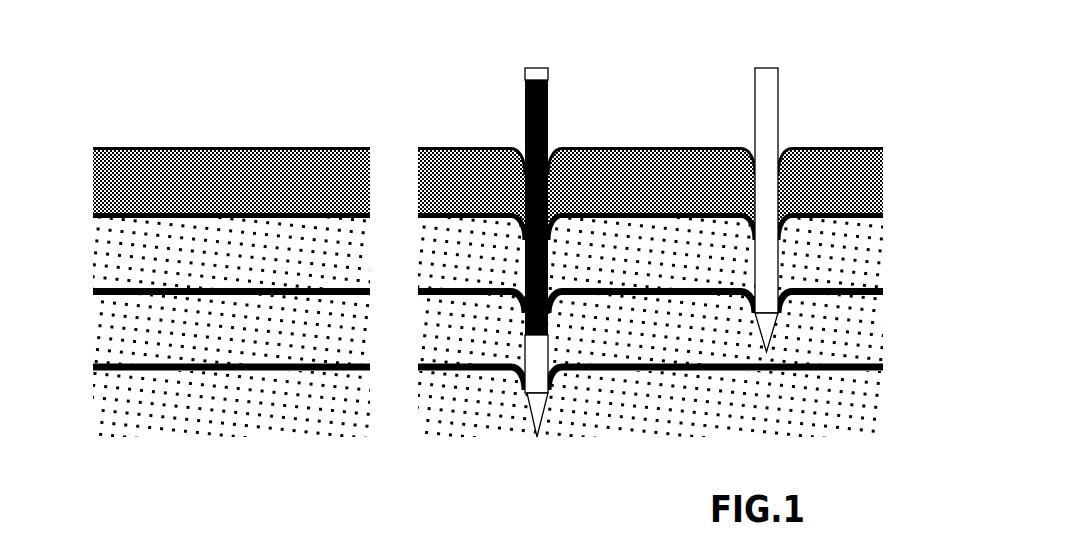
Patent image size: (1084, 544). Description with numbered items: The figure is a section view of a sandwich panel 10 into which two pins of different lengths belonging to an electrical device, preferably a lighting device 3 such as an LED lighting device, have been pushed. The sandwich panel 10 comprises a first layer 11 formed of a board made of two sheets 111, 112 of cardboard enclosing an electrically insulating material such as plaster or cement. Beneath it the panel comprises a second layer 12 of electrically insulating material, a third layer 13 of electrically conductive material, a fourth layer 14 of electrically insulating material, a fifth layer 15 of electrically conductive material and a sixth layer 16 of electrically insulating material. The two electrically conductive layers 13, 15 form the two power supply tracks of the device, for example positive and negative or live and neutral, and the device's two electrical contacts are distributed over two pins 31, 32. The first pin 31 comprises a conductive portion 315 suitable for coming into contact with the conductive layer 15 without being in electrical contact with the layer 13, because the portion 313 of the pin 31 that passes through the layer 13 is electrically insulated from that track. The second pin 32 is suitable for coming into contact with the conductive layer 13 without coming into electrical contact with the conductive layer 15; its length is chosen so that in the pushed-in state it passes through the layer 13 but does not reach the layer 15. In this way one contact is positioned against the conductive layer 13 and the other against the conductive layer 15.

The lighting device 3 is at (555, 254).
The first pin 31 is at (440, 258).
The insulated portion of the first pin 313 is at (523, 113).
The conductive portion 315 is at (535, 402).
The second pin 32 is at (767, 105).
The sandwich panel 10 is at (514, 227).
The first layer 11 is at (514, 172).
The first sheet of cardboard 111 is at (830, 148).
The second sheet of cardboard 112 is at (840, 215).
The second layer 12 is at (840, 260).
The third layer 13 is at (840, 289).
The fourth layer 14 is at (840, 335).
The fifth layer 15 is at (850, 363).
The sixth layer 16 is at (840, 428).